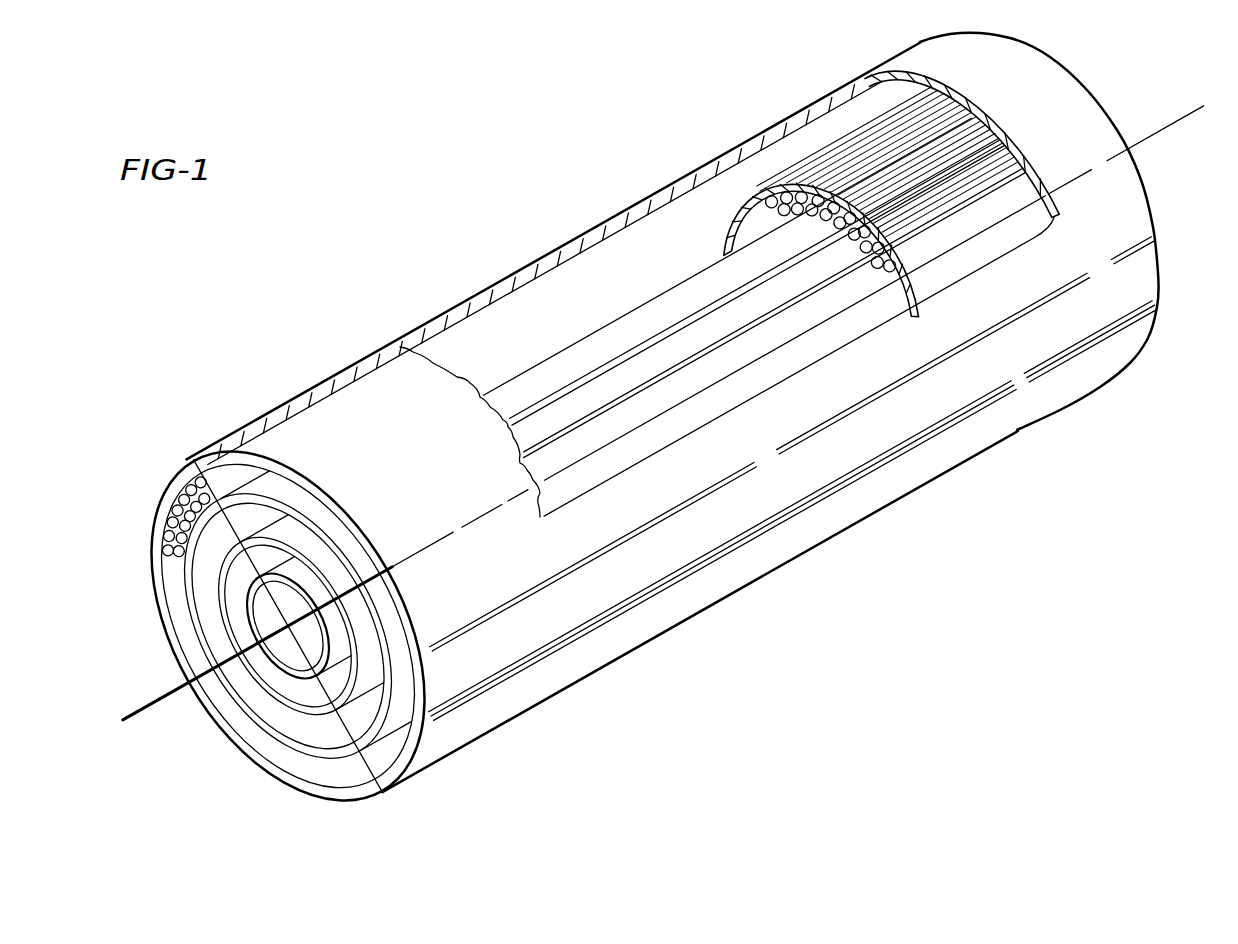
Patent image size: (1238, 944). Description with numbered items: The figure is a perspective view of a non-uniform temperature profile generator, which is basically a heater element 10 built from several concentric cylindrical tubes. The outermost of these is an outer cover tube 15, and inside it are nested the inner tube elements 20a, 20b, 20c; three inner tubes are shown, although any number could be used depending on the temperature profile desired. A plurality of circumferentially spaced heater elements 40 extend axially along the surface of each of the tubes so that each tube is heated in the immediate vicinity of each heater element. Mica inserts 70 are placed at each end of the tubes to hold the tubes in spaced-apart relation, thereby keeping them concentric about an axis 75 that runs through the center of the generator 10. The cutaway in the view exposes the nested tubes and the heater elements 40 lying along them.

The heater element 10 is at (222, 384).
The outer cover tube 15 is at (320, 382).
The inner tube element 20a is at (217, 713).
The inner tube element 20b is at (303, 718).
The inner tube element 20c is at (313, 682).
The heater elements 40 is at (693, 360).
The mica inserts 70 is at (247, 563).
The axis 75 is at (1153, 127).